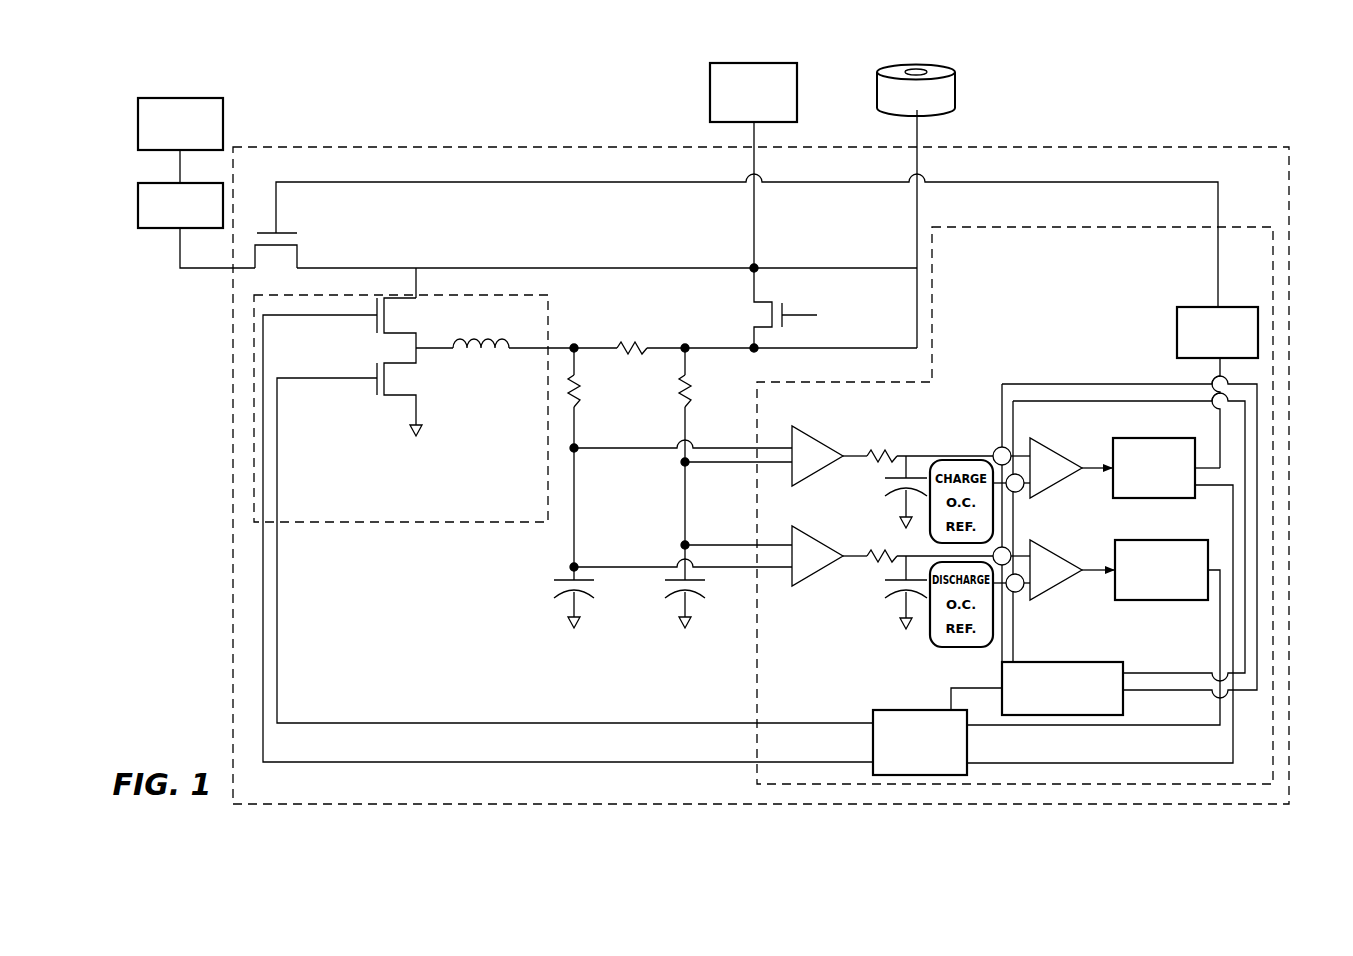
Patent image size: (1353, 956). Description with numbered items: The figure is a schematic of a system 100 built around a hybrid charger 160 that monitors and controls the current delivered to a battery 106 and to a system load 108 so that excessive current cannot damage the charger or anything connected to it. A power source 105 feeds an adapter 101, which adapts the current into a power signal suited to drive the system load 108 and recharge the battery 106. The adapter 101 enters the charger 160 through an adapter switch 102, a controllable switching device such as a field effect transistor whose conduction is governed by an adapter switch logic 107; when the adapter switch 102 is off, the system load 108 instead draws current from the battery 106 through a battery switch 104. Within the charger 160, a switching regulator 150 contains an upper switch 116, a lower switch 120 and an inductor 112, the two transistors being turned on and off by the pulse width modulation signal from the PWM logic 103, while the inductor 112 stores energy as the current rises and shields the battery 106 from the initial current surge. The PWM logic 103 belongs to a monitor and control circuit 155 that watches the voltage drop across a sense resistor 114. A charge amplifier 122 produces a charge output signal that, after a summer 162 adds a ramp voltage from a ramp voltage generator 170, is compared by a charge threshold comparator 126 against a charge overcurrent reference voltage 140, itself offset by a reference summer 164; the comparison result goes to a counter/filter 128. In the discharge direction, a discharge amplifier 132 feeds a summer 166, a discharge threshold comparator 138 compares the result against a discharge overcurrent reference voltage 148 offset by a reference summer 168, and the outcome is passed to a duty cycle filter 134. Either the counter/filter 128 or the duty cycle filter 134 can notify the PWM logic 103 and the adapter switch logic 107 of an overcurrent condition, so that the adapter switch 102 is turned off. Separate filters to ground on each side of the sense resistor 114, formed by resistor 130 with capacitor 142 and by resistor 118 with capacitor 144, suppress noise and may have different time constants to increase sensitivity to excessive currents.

The system 100 is at (1027, 112).
The adapter 101 is at (138, 208).
The adapter switch (AGATE) 102 is at (297, 257).
The PWM logic 103 is at (932, 710).
The battery switch (BGATE) 104 is at (783, 320).
The power source 105 is at (138, 130).
The battery 106 is at (955, 90).
The adapter switch logic (AGATE logic) 107 is at (1177, 338).
The system load 108 is at (710, 104).
The inductor 112 is at (482, 336).
The sense resistor 114 is at (617, 345).
The upper switch (UFET) 116 is at (375, 325).
The resistor 118 is at (680, 398).
The lower switch (LFET) 120 is at (418, 395).
The charge amplifier 122 is at (845, 452).
The charge threshold comparator 126 is at (1046, 441).
The counter/filter 128 is at (1153, 438).
The resistor 130 is at (580, 392).
The discharge amplifier 132 is at (808, 531).
The duty cycle filter 134 is at (1152, 540).
The discharge threshold comparator 138 is at (1075, 564).
The charge overcurrent reference voltage 140 is at (928, 522).
The capacitor 142 is at (587, 582).
The capacitor 144 is at (698, 582).
The discharge overcurrent reference voltage 148 is at (927, 636).
The switching regulator 150 is at (400, 498).
The monitor and control circuit 155 is at (1068, 326).
The hybrid charger 160 is at (1122, 174).
The summer 162 is at (996, 448).
The reference summer 164 is at (1019, 492).
The summer 166 is at (1007, 547).
The reference summer 168 is at (1018, 592).
The ramp voltage generator 170 is at (1063, 662).